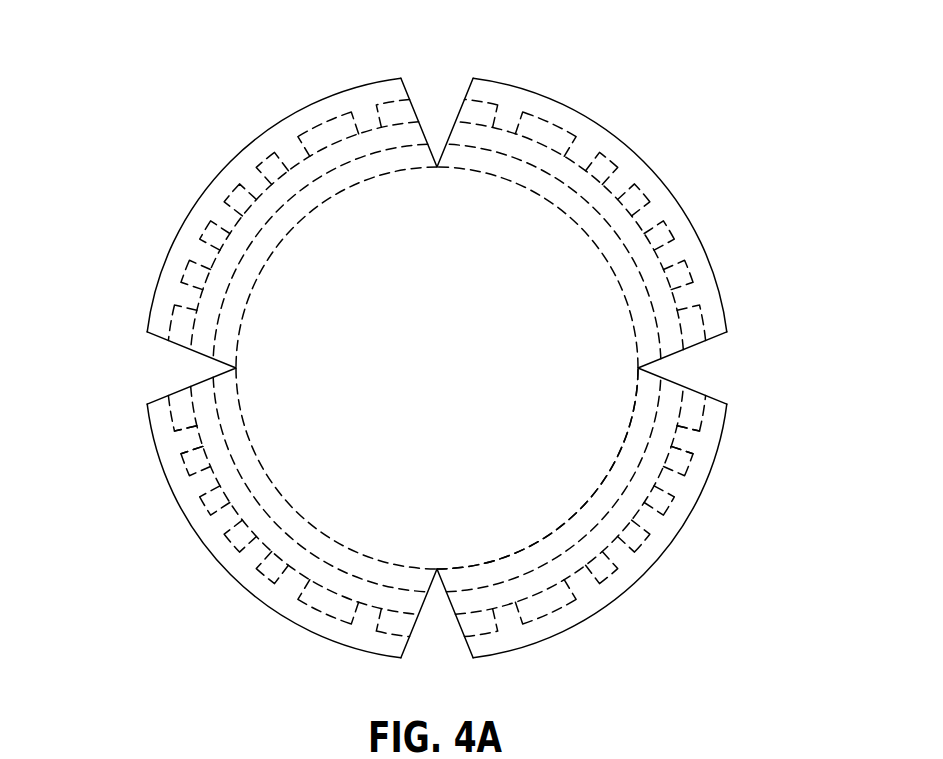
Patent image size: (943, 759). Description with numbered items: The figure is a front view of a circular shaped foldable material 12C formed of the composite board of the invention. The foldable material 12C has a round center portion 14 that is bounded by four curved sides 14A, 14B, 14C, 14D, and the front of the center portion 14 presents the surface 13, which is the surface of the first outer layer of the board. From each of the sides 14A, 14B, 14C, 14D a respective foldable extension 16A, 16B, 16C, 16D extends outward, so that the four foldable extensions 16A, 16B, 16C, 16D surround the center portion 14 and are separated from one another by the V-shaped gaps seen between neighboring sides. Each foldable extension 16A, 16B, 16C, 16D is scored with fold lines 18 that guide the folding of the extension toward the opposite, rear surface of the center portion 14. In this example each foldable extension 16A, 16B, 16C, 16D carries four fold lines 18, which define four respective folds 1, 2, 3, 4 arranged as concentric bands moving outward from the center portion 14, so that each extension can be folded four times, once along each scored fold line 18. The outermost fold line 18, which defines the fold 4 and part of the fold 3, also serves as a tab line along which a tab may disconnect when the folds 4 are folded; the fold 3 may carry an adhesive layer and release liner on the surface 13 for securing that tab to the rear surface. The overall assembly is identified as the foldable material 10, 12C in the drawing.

The device 10 is at (186, 132).
The circular shaped foldable material 12C is at (459, 361).
The surface 13 is at (547, 460).
The center portion 14 is at (446, 374).
The side 14A is at (610, 262).
The side 14B is at (372, 178).
The side 14C is at (357, 549).
The side 14D is at (524, 545).
The foldable extension 16A is at (726, 252).
The foldable extension 16B is at (431, 97).
The foldable extension 16C is at (152, 382).
The foldable extension 16D is at (740, 443).
The fold lines 18 is at (223, 484).
The fold 1 is at (437, 368).
The fold 2 is at (437, 368).
The fold 3 is at (437, 368).
The fold 4 is at (436, 367).